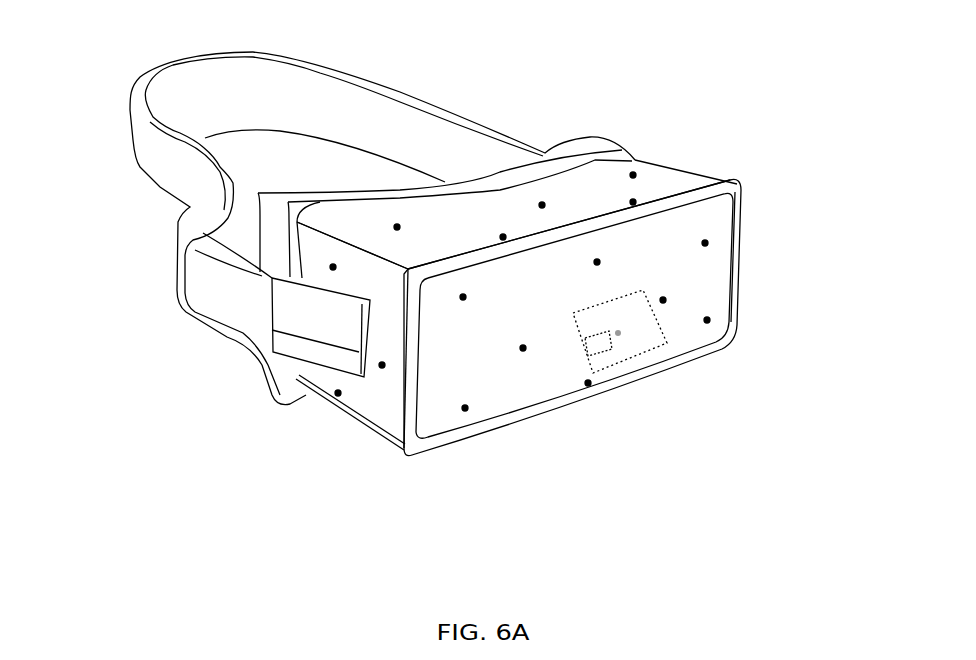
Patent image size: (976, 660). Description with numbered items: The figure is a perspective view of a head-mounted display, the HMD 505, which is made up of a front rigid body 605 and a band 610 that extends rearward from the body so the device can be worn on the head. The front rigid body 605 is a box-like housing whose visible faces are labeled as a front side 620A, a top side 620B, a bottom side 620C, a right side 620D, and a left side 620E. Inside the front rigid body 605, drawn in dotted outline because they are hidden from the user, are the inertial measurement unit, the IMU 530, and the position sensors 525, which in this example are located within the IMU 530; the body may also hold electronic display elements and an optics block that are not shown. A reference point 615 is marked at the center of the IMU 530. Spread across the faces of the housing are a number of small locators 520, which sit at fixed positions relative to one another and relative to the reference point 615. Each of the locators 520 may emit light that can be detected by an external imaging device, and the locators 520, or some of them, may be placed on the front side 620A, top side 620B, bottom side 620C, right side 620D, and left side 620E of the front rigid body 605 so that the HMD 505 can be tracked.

The HMD 505 is at (71, 50).
The band 610 is at (443, 110).
The front rigid body 605 is at (750, 184).
The front side 620A is at (467, 417).
The top side 620B is at (368, 238).
The bottom side 620C is at (338, 430).
The right side 620D is at (376, 402).
The left side 620E is at (660, 163).
The locators 520 is at (707, 320).
The position sensors 525 is at (593, 352).
The IMU 530 is at (667, 343).
The reference point 615 is at (633, 340).